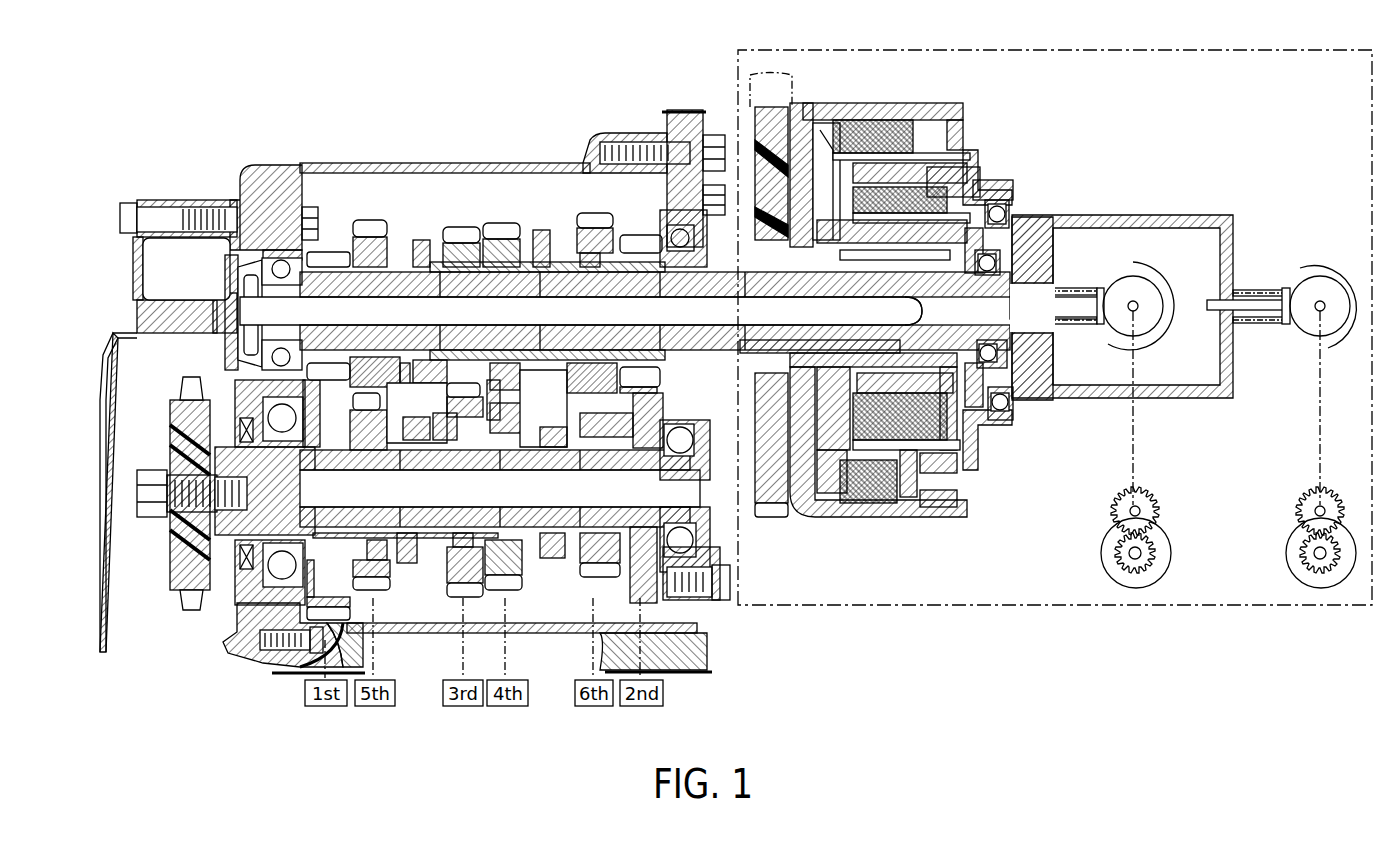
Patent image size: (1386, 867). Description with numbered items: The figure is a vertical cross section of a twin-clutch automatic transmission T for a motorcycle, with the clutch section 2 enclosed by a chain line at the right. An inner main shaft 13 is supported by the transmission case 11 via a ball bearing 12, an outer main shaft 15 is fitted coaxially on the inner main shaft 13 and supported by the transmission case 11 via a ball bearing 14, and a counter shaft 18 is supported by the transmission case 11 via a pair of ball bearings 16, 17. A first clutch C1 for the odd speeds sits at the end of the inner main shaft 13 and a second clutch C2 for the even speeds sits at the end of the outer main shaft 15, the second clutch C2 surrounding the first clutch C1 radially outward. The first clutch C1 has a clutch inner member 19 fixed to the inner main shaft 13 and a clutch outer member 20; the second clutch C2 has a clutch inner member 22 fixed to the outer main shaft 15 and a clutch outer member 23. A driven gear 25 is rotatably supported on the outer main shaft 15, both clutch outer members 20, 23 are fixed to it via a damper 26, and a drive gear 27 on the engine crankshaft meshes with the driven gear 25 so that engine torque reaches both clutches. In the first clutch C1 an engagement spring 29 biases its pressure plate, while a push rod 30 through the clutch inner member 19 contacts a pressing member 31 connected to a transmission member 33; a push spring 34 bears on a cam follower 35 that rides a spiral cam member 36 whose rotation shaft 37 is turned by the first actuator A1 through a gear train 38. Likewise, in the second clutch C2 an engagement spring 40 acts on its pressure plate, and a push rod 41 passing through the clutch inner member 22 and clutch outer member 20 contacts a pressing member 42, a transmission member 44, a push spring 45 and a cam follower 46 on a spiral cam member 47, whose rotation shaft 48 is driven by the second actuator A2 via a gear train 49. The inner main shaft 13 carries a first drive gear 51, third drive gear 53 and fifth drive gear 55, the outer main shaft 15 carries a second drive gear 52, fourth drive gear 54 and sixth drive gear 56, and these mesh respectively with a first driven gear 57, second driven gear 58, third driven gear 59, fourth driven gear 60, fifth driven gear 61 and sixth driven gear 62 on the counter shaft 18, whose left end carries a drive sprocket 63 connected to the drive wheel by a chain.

The automatic transmission T is at (470, 75).
The twin clutch unit 2 is at (912, 612).
The transmission case 11 is at (484, 160).
The ball bearing 12 is at (237, 262).
The inner main shaft 13 is at (545, 282).
The ball bearing 14 is at (680, 258).
The outer main shaft 15 is at (565, 262).
The ball bearing 16 is at (286, 553).
The ball bearing 17 is at (678, 525).
The counter shaft 18 is at (462, 478).
The clutch inner member 19 is at (898, 252).
The clutch outer member 20 is at (925, 112).
The clutch inner member 22 is at (830, 262).
The clutch outer member 23 is at (857, 105).
The driven gear 25 is at (757, 140).
The damper 26 is at (757, 233).
The drive gear 27 is at (750, 83).
The engagement spring 29 is at (775, 265).
The push rod 30 is at (856, 258).
The pressing member 31 is at (1020, 240).
The transmission member 33 is at (1055, 285).
The push spring 34 is at (1085, 325).
The cam follower 35 is at (1102, 325).
The cam member 36 is at (1172, 292).
The rotation shaft 37 is at (1138, 300).
The gear train 38 is at (1162, 519).
The engagement spring 40 is at (815, 170).
The push rod 41 is at (845, 135).
The pressing member 42 is at (960, 180).
The transmission member 44 is at (1058, 216).
The push spring 45 is at (1268, 290).
The cam follower 46 is at (1285, 325).
The cam member 47 is at (1350, 292).
The rotation shaft 48 is at (1320, 280).
The gear train 49 is at (1298, 512).
The first drive gear 51 is at (330, 252).
The second drive gear 52 is at (635, 242).
The third drive gear 53 is at (460, 233).
The fourth drive gear 54 is at (505, 225).
The fifth drive gear 55 is at (375, 228).
The sixth drive gear 56 is at (590, 220).
The first driven gear 57 is at (290, 614).
The second driven gear 58 is at (680, 603).
The third driven gear 59 is at (465, 585).
The fourth driven gear 60 is at (505, 585).
The fifth driven gear 61 is at (378, 582).
The sixth driven gear 62 is at (595, 580).
The drive sprocket 63 is at (195, 610).
The first actuator A1 is at (1171, 556).
The second actuator A2 is at (1290, 558).
The first clutch C1 is at (937, 172).
The second clutch C2 is at (937, 100).